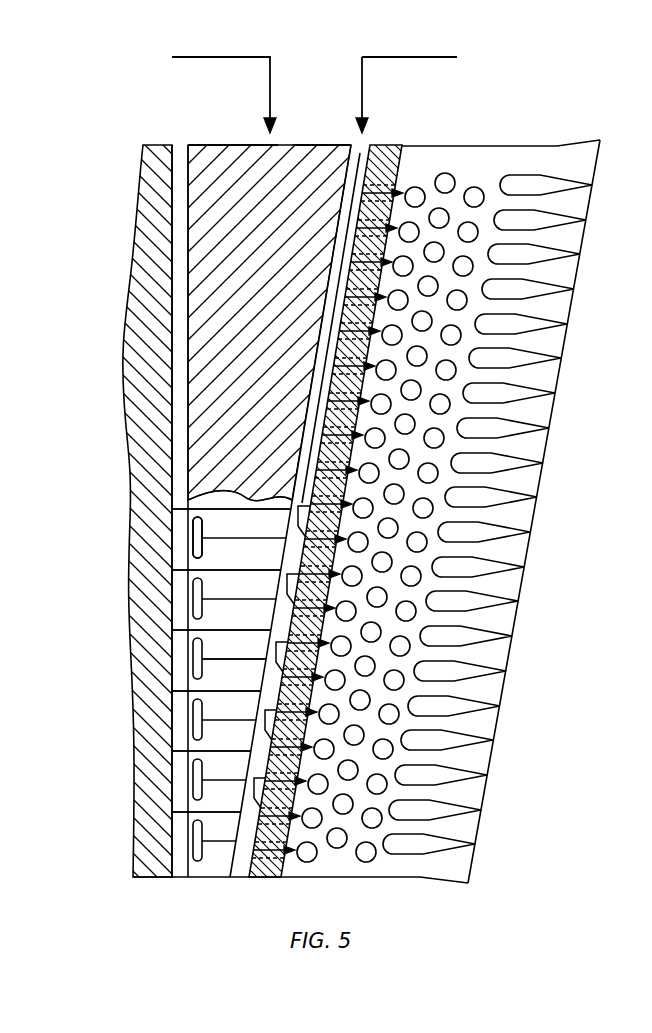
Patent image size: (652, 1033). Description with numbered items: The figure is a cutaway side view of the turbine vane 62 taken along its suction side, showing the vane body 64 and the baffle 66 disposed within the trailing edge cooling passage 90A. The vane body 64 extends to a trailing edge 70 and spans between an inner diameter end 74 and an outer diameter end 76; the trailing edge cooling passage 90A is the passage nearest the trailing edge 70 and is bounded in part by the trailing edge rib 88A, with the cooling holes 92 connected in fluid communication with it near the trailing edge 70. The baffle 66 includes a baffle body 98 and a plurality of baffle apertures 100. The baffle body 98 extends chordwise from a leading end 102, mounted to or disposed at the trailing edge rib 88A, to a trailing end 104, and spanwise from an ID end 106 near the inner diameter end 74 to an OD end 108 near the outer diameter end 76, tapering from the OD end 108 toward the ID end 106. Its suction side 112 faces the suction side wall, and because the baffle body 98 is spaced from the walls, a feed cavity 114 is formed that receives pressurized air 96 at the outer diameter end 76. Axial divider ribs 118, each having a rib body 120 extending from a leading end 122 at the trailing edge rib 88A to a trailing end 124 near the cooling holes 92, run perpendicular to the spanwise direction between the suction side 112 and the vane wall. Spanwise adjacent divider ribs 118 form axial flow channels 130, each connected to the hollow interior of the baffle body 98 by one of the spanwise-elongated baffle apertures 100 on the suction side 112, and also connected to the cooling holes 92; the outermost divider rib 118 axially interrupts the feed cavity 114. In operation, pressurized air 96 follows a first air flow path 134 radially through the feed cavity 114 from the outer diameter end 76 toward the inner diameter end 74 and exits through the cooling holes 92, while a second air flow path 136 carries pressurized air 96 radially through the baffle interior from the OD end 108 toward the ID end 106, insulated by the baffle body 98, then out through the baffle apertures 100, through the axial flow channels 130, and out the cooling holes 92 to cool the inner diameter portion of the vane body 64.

The turbine vane 62 is at (560, 82).
The vane body 64 is at (380, 148).
The baffle 66 is at (222, 360).
The trailing edge 70 is at (528, 613).
The inner diameter end 74 is at (418, 888).
The outer diameter end 76 is at (207, 136).
The trailing edge rib 88A is at (155, 303).
The trailing edge cooling passage 90A is at (178, 452).
The cooling holes 92 is at (527, 445).
The pressurized air 96 is at (200, 57).
The baffle body 98 is at (210, 246).
The baffle apertures 100 is at (193, 594).
The leading end 102 is at (193, 656).
The trailing end 104 is at (249, 828).
The ID end 106 is at (216, 857).
The OD end 108 is at (287, 147).
The suction side 112 is at (200, 423).
The feed cavity 114 is at (182, 279).
The axial divider ribs 118 is at (213, 513).
The rib body 120 is at (204, 498).
The leading end 122 is at (193, 517).
The trailing end 124 is at (380, 523).
The axial flow channels 130 is at (260, 563).
The first air flow path 134 is at (346, 246).
The second air flow path 136 is at (303, 455).